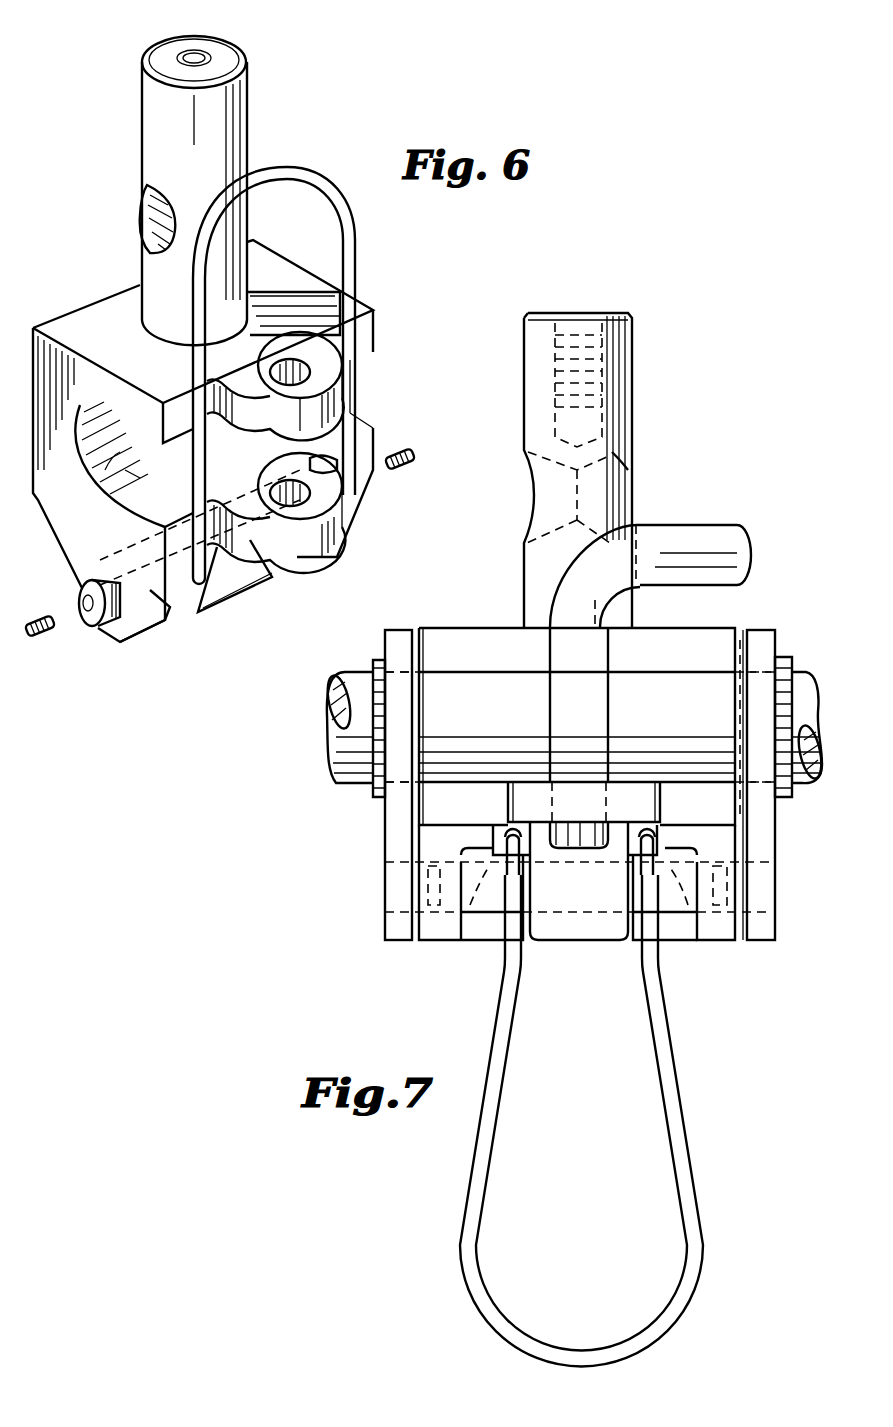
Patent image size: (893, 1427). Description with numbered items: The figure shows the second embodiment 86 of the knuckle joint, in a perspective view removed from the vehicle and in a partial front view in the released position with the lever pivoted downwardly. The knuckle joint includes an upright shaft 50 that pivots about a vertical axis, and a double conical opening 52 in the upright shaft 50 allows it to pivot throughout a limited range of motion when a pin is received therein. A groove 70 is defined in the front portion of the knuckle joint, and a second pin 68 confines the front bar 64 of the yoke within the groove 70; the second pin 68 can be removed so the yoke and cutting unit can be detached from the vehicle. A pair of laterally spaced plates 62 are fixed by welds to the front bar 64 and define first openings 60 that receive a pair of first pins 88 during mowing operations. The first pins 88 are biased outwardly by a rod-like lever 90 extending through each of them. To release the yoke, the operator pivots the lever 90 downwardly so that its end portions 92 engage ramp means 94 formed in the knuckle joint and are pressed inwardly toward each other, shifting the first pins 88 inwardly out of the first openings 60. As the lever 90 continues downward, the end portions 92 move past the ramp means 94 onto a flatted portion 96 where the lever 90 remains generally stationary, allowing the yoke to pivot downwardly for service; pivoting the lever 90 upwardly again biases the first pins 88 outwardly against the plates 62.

In FIG. 6, the upright shaft 50 is at (141, 126).
In FIG. 7, the upright shaft 50 is at (632, 340).
In FIG. 6, the double conical opening 52 is at (150, 222).
In FIG. 7, the double conical opening 52 is at (632, 462).
In FIG. 7, the first openings 60 is at (400, 906).
In FIG. 7, the laterally spaced plates 62 is at (392, 942).
In FIG. 7, the front bar 64 is at (358, 795).
In FIG. 7, the second pin 68 is at (716, 540).
In FIG. 6, the groove 70 is at (110, 492).
In FIG. 6, the second embodiment of the knuckle joint 86 is at (296, 72).
In FIG. 7, the second embodiment of the knuckle joint 86 is at (690, 420).
In FIG. 6, the first pins 88 is at (115, 640).
In FIG. 7, the first pins 88 is at (468, 940).
In FIG. 6, the rod-like lever 90 is at (292, 165).
In FIG. 7, the rod-like lever 90 is at (695, 1122).
In FIG. 7, the end portions 92 is at (500, 855).
In FIG. 7, the ramp means 94 is at (480, 905).
In FIG. 7, the flatted portion 96 is at (628, 832).